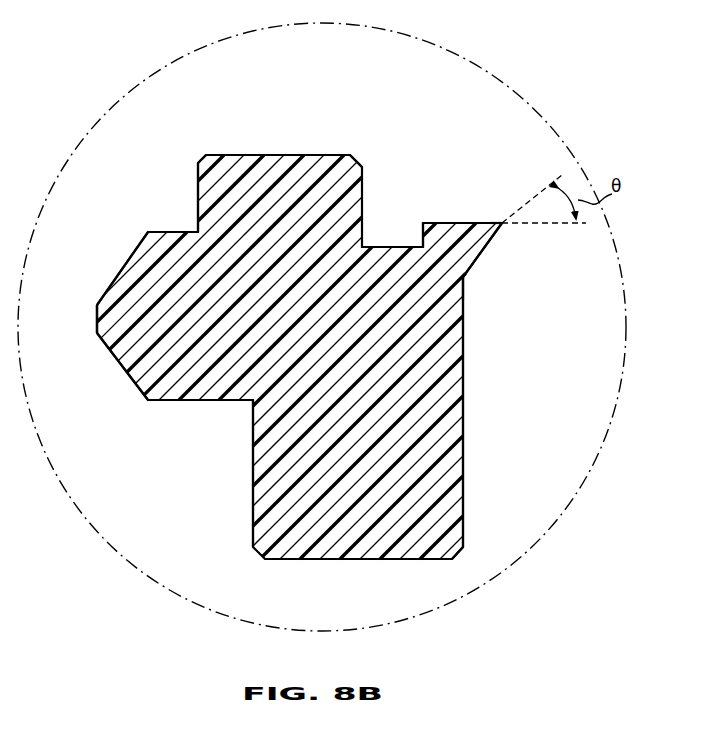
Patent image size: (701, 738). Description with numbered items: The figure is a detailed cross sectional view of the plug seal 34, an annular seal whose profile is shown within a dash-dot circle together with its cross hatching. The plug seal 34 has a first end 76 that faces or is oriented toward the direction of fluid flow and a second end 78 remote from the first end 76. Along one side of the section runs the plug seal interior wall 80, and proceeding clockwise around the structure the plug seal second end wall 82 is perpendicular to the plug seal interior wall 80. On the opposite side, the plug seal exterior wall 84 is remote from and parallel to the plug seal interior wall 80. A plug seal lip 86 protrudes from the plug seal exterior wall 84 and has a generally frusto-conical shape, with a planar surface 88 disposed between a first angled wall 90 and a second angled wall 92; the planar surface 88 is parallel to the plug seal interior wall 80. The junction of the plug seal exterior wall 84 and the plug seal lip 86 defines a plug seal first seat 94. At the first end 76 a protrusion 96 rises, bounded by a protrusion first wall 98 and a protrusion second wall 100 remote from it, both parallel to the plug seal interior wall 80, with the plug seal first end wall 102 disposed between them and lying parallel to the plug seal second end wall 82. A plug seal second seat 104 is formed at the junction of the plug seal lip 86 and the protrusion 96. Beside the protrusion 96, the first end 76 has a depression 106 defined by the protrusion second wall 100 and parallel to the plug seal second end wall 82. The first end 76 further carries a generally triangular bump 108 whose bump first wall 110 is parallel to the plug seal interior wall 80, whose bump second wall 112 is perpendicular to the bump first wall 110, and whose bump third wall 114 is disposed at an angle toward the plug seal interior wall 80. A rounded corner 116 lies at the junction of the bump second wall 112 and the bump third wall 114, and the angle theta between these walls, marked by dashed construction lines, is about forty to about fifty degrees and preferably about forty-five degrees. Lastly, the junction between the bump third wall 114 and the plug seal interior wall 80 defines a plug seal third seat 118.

The plug seal 34 is at (308, 329).
The first end 76 is at (272, 95).
The second end 78 is at (340, 572).
The plug seal interior wall 80 is at (464, 378).
The plug seal second end wall 82 is at (420, 561).
The plug seal exterior wall 84 is at (252, 486).
The plug seal lip 86 is at (86, 298).
The planar surface 88 is at (96, 320).
The first angled wall 90 is at (124, 373).
The second angled wall 92 is at (127, 260).
The plug seal first seat 94 is at (246, 406).
The protrusion 96 is at (228, 148).
The protrusion first wall 98 is at (198, 176).
The protrusion second wall 100 is at (362, 170).
The plug seal first end wall 102 is at (288, 155).
The plug seal second seat 104 is at (186, 226).
The depression 106 is at (410, 242).
The bump 108 is at (492, 176).
The bump first wall 110 is at (424, 232).
The bump second wall 112 is at (453, 222).
The bump third wall 114 is at (484, 259).
The rounded corner 116 is at (503, 222).
The plug seal third seat 118 is at (464, 283).